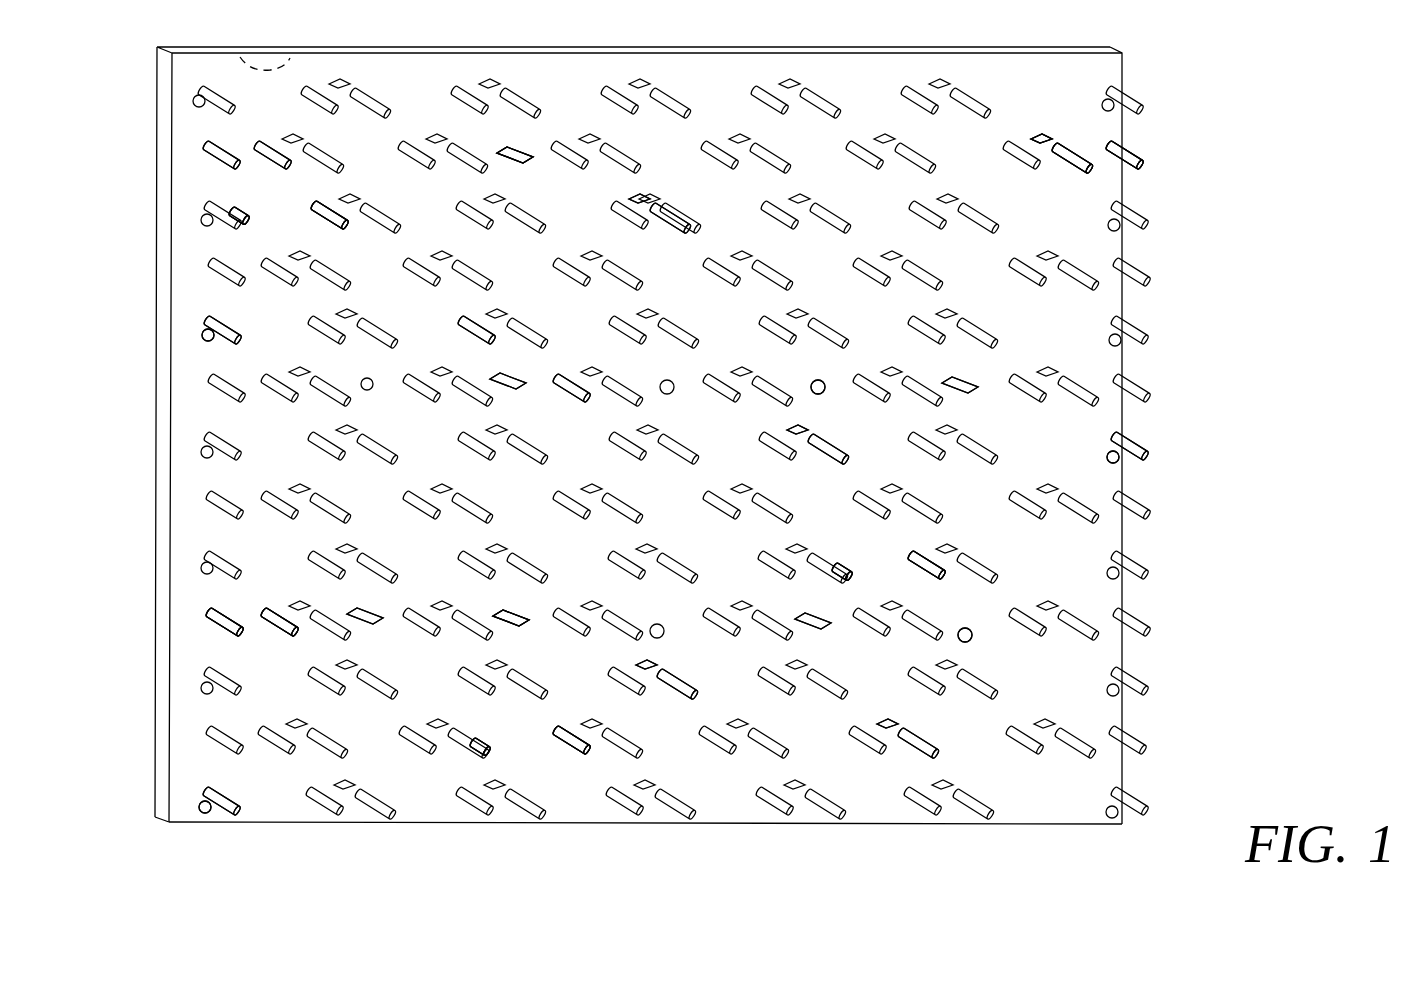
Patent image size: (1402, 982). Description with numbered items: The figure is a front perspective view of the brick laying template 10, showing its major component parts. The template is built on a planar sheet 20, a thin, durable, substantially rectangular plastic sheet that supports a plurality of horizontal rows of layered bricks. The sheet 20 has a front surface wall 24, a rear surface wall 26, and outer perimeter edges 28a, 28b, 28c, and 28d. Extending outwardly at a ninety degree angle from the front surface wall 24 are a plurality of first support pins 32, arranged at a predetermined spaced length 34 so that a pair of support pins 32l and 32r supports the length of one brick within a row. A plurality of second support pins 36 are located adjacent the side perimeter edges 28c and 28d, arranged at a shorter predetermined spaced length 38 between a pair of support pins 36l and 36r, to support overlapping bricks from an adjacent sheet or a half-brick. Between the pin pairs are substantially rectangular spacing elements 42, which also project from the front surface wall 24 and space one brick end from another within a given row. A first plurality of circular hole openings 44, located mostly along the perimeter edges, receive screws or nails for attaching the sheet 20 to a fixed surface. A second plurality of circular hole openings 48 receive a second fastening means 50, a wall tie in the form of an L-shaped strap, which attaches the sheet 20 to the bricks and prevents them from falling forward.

The brick laying template 10 is at (1186, 79).
The planar sheet 20 is at (848, 72).
The front surface wall 24 is at (708, 107).
The rear surface wall 26 is at (273, 58).
The outer perimeter edge 28a is at (514, 48).
The outer perimeter edge 28b is at (155, 790).
The side perimeter edge 28c is at (160, 465).
The side perimeter edge 28d is at (1002, 50).
The first support pins 32 is at (684, 222).
The left first support pin 32l is at (235, 211).
The right first support pin 32r is at (313, 217).
The spaced length 34 is at (232, 177).
The second support pins 36 is at (256, 142).
The left second support pin 36l is at (212, 622).
The right second support pin 36r is at (275, 620).
The spaced length 38 is at (218, 595).
The spacing elements 42 is at (648, 194).
The first circular hole openings 44 is at (205, 340).
The second circular hole openings 48 is at (503, 150).
The second fastening means 50 is at (528, 152).